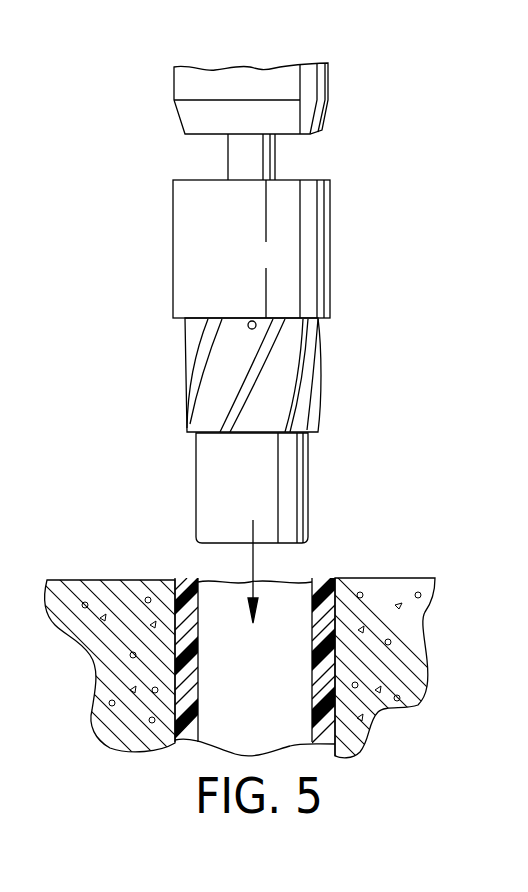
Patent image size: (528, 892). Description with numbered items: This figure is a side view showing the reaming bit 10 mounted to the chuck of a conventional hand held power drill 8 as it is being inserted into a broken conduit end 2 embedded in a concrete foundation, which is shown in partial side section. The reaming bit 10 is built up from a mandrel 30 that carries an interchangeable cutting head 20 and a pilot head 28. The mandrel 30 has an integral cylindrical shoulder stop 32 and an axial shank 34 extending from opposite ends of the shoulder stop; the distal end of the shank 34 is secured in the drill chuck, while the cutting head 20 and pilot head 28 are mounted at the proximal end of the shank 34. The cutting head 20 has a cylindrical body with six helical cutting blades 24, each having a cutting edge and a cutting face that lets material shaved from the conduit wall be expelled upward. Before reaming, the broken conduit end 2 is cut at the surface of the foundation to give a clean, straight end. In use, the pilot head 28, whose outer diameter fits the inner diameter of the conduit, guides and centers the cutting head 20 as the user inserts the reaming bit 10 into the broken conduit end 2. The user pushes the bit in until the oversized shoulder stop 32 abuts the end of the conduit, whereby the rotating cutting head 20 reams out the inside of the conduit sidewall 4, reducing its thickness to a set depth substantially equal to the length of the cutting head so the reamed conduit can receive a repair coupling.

The broken conduit end 2 is at (360, 575).
The conduit sidewall 4 is at (198, 667).
The hand held power drill 8 is at (313, 83).
The reaming bit 10 is at (259, 303).
The cutting head 20 is at (229, 375).
The helical cutting blades 24 is at (303, 384).
The pilot head 28 is at (208, 484).
The mandrel 30 is at (238, 249).
The shoulder stop 32 is at (338, 258).
The shank 34 is at (275, 163).